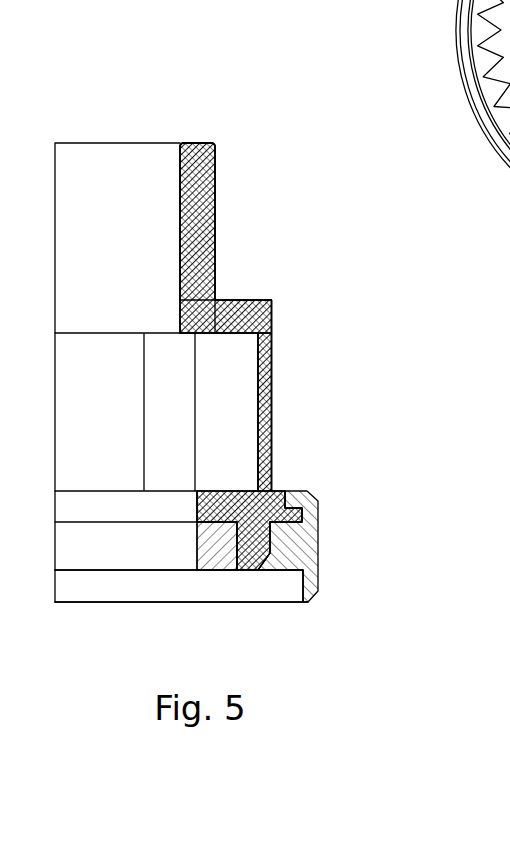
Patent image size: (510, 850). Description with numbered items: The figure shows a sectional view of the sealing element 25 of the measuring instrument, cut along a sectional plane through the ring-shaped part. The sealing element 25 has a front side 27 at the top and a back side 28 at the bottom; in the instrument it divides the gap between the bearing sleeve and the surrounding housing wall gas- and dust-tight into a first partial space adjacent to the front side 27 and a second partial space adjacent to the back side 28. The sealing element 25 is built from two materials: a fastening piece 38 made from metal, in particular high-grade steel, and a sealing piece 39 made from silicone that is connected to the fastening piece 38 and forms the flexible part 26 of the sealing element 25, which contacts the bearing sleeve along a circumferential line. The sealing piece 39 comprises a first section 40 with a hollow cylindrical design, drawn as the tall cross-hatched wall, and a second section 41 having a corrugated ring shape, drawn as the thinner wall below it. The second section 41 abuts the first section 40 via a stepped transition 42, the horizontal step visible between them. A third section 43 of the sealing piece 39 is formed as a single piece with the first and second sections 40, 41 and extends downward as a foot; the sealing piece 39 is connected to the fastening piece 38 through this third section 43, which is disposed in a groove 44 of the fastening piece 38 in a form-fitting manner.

The sealing element 25 is at (227, 117).
The flexible part 26 is at (290, 323).
The front side 27 is at (187, 130).
The back side 28 is at (282, 606).
The fastening piece 38 is at (302, 543).
The sealing piece 39 is at (241, 356).
The first section 40 is at (203, 180).
The second section 41 is at (262, 403).
The stepped transition 42 is at (242, 300).
The third section 43 is at (247, 571).
The groove 44 is at (233, 566).